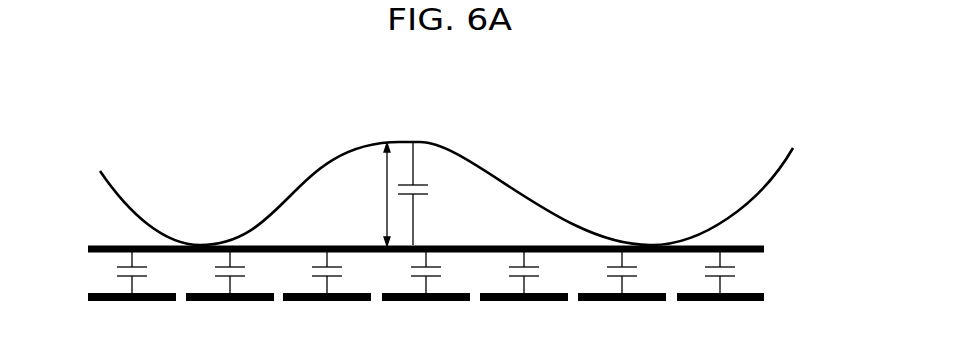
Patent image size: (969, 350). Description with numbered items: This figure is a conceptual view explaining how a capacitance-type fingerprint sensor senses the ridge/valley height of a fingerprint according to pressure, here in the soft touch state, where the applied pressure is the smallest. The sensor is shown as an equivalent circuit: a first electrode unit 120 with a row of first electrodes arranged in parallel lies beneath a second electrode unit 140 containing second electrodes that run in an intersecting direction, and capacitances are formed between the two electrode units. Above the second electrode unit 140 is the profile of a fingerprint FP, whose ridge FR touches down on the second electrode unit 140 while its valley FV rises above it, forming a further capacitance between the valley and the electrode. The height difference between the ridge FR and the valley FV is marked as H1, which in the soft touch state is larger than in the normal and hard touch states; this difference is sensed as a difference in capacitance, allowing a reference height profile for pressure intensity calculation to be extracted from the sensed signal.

The second electrode unit 140 is at (774, 248).
The first electrode unit 120 is at (774, 296).
The fingerprint FP is at (770, 179).
The ridge FR is at (200, 243).
The valley FV is at (400, 140).
The ridge/valley height difference H1 is at (372, 194).